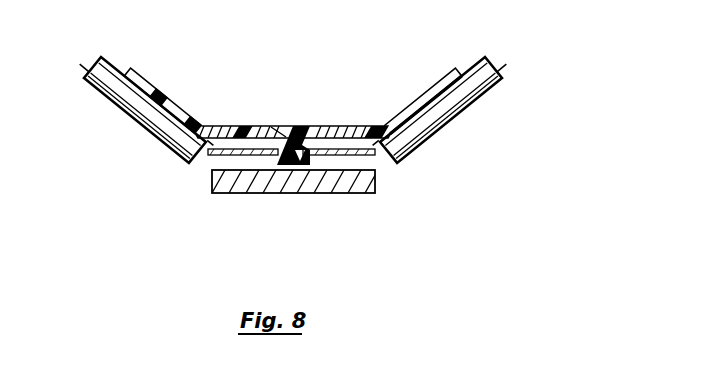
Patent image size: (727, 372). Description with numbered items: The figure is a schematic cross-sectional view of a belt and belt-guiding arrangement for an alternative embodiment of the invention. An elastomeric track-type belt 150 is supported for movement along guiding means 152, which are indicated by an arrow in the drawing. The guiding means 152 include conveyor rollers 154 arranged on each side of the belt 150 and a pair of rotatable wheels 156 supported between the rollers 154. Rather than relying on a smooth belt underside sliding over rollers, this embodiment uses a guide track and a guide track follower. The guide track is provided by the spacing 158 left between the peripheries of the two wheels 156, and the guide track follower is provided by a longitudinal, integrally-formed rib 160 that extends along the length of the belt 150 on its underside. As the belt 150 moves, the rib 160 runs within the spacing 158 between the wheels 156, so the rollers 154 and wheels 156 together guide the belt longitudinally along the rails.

The elastomeric track-type belt 150 is at (400, 113).
The guiding means 152 is at (424, 177).
The conveyor rollers 154 is at (117, 98).
The rotatable wheels 156 is at (234, 170).
The spacing 158 is at (288, 137).
The rib 160 is at (292, 172).